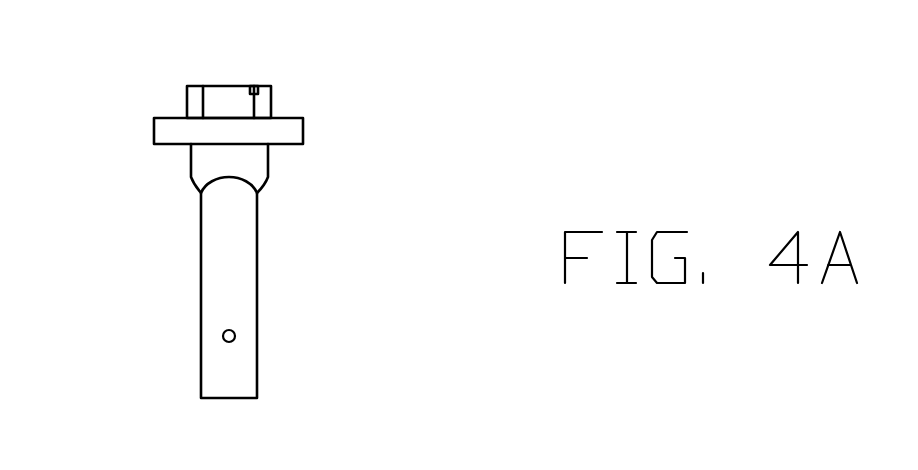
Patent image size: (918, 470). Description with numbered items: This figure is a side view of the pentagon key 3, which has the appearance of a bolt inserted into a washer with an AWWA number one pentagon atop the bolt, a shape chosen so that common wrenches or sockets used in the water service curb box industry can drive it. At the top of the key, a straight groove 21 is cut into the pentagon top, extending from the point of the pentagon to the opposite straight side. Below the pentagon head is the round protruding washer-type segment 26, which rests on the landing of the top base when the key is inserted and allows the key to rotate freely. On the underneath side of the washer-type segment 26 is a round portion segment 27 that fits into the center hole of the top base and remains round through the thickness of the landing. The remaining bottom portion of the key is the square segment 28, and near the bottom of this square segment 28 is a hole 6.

The straight groove 21 is at (254, 86).
The round protruding washer-type segment 26 is at (303, 130).
The round portion segment 27 is at (254, 180).
The pentagon key 3 is at (201, 254).
The square segment 28 is at (243, 285).
The hole 6 is at (227, 343).